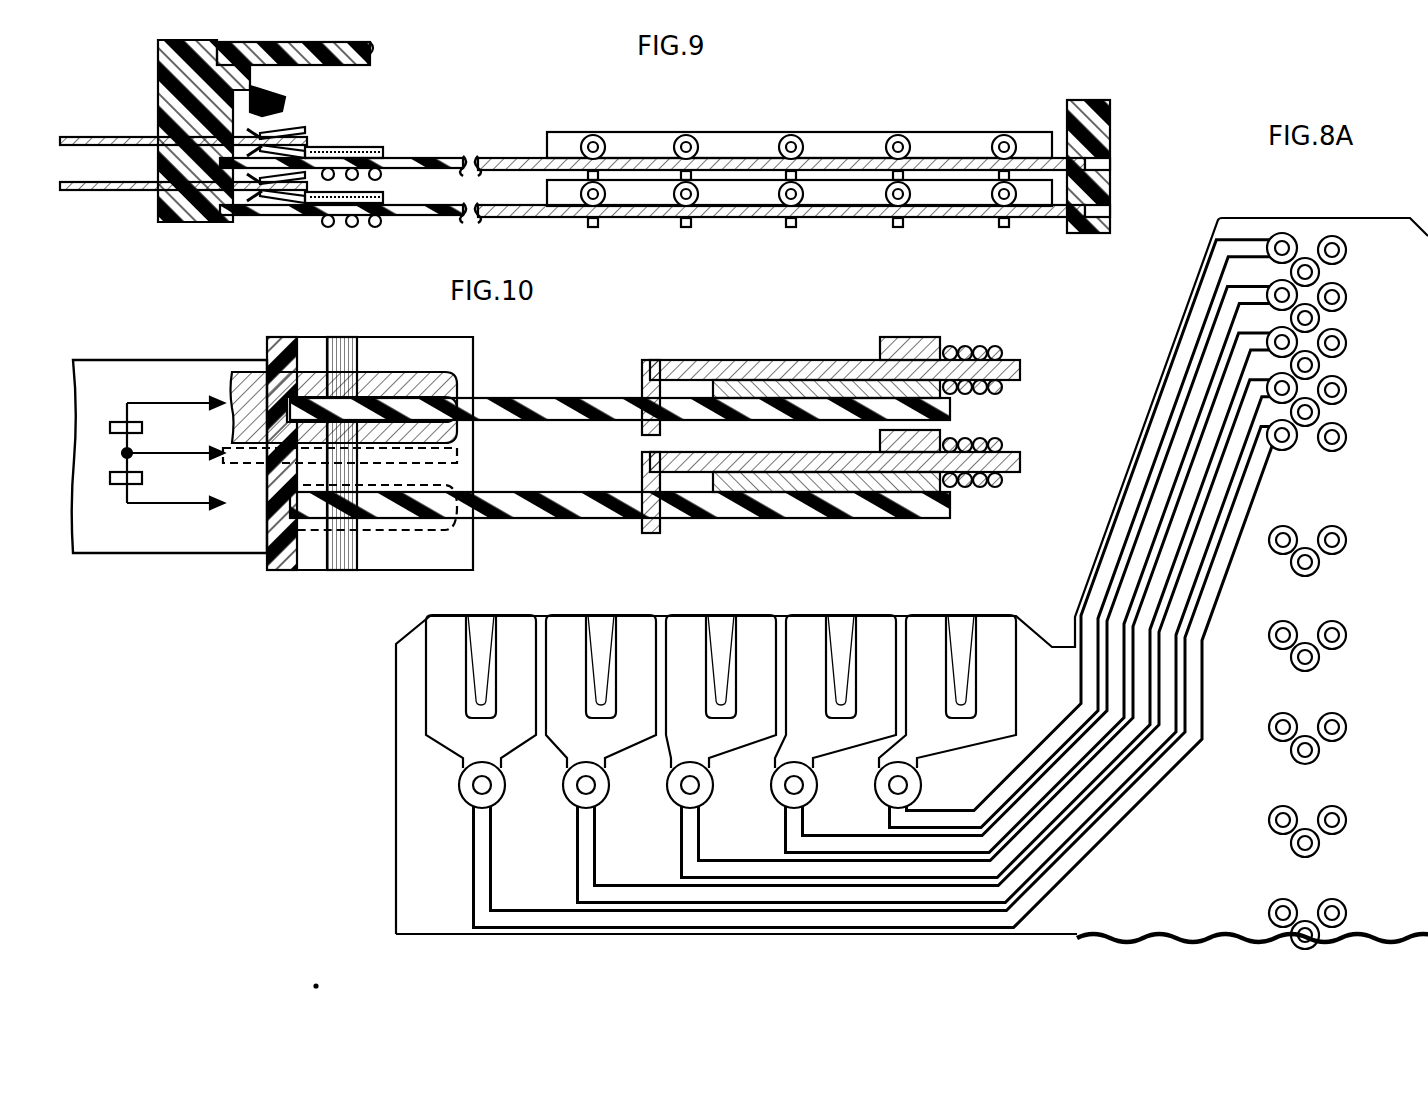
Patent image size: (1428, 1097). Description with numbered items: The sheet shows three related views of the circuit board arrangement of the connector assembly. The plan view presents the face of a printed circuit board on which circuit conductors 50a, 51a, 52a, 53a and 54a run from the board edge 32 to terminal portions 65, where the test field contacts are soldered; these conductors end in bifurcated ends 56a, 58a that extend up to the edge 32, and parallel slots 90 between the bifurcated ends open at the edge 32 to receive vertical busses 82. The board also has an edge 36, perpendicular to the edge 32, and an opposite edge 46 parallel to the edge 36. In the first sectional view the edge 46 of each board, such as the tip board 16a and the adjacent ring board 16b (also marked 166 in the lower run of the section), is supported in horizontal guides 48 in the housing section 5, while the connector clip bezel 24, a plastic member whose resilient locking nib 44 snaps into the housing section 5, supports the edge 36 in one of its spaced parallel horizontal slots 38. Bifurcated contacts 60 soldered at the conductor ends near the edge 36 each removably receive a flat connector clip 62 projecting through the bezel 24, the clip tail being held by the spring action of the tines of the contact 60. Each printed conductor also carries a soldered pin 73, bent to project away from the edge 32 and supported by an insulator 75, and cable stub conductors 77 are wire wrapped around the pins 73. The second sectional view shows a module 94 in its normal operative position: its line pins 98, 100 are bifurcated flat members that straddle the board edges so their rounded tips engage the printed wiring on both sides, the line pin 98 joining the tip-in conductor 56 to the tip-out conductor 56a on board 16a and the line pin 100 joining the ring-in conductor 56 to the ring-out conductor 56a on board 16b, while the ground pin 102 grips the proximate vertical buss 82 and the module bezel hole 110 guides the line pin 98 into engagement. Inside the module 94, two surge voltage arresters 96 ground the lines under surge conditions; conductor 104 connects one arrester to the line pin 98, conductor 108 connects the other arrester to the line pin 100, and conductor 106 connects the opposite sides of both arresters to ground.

In FIG. 9, the housing section 5 is at (366, 46).
In FIG. 9, the connector clip bezel 24 is at (158, 215).
In FIG. 9, the locking nib 44 is at (282, 104).
In FIG. 9, the flat connector clip 62 is at (130, 147).
In FIG. 9, the bifurcated contact 60 is at (305, 131).
In FIG. 9, the horizontal slots 38 is at (192, 224).
In FIG. 9, the circuit board 16a is at (482, 158).
In FIG. 10, the circuit board 16a is at (952, 410).
In FIG. 9, the conductor 166 is at (504, 218).
In FIG. 9, the insulator 75 is at (746, 132).
In FIG. 10, the insulator 75 is at (886, 350).
In FIG. 9, the pin 73 is at (900, 146).
In FIG. 10, the pin 73 is at (758, 360).
In FIG. 9, the conductors 77 is at (806, 140).
In FIG. 10, the conductors 77 is at (1003, 350).
In FIG. 9, the horizontal guides 48 is at (1108, 112).
In FIG. 9, the circuit board edge 46 is at (1105, 163).
In FIG. 8A, the circuit board edge 46 is at (396, 866).
In FIG. 10, the module 94 is at (133, 556).
In FIG. 10, the surge voltage arrester 96 is at (116, 424).
In FIG. 10, the conductor 104 is at (143, 360).
In FIG. 10, the conductor 106 is at (176, 455).
In FIG. 10, the conductor 108 is at (175, 503).
In FIG. 10, the hole 110 is at (343, 451).
In FIG. 10, the line pin 100 is at (395, 568).
In FIG. 10, the vertical buss 82 is at (322, 578).
In FIG. 10, the line pin 98 is at (385, 372).
In FIG. 10, the ground pin 102 is at (458, 455).
In FIG. 10, the bifurcated section 56 is at (620, 451).
In FIG. 10, the bifurcated end 56a is at (590, 422).
In FIG. 8A, the bifurcated end 56a is at (514, 615).
In FIG. 10, the circuit board 16b is at (952, 512).
In FIG. 8A, the bifurcated end 58a is at (435, 671).
In FIG. 8A, the slots 90 is at (722, 624).
In FIG. 8A, the circuit board edge 32 is at (542, 615).
In FIG. 8A, the circuit conductor 54a is at (808, 677).
In FIG. 8A, the circuit conductor 53a is at (895, 641).
In FIG. 8A, the circuit conductor 52a is at (912, 605).
In FIG. 8A, the circuit conductor 51a is at (810, 615).
In FIG. 8A, the circuit conductor 50a is at (961, 624).
In FIG. 8A, the terminal portions 65 is at (1284, 233).
In FIG. 8A, the circuit board edge 36 is at (1352, 703).